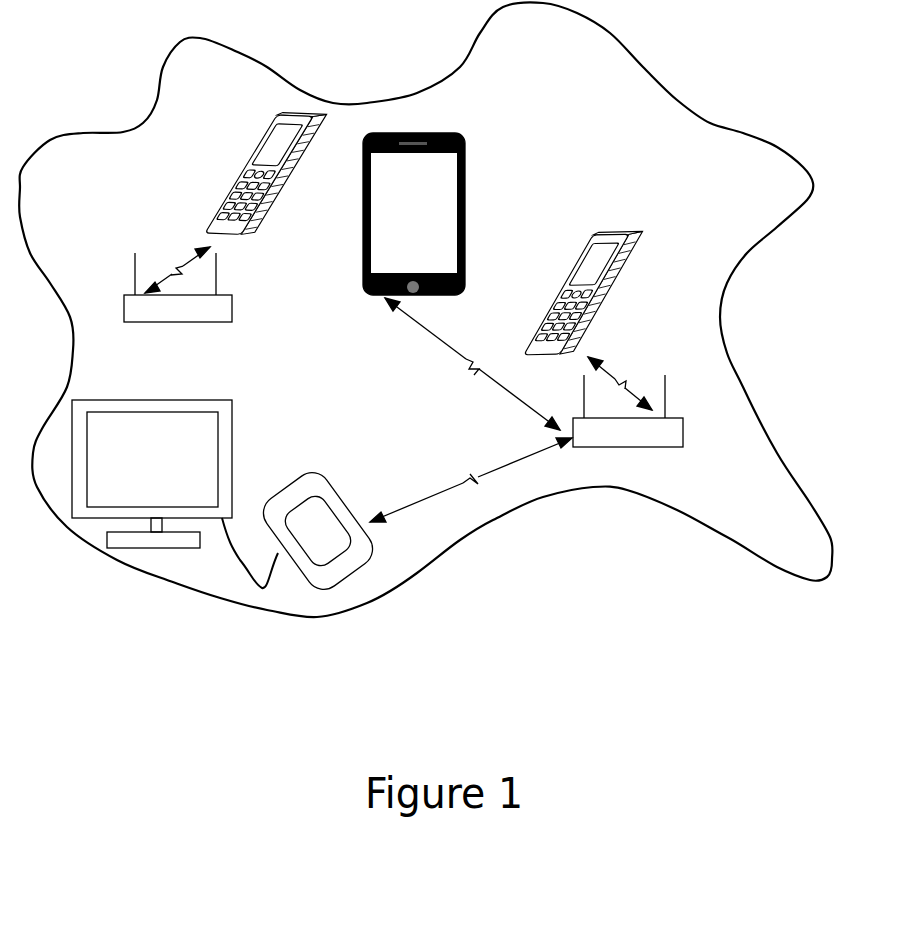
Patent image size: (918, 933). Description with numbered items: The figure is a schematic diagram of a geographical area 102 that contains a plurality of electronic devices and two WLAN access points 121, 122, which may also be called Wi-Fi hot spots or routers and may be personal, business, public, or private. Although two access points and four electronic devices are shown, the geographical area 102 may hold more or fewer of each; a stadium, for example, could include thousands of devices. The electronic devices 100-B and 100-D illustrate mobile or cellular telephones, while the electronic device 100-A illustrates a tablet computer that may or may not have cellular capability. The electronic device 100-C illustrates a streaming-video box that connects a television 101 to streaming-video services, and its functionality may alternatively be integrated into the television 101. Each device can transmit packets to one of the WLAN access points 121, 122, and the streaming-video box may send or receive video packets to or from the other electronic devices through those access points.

The tablet computer 100-A is at (463, 160).
The mobile/cellular telephone 100-B is at (628, 248).
The streaming-video box 100-C is at (328, 482).
The mobile/cellular telephone 100-D is at (274, 128).
The television 101 is at (218, 413).
The geographical area 102 is at (483, 525).
The WLAN access point 121 is at (628, 411).
The WLAN access point 122 is at (178, 287).